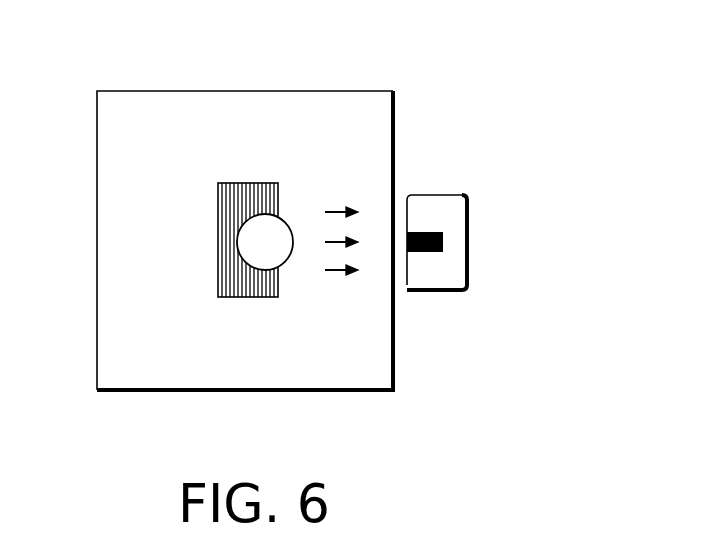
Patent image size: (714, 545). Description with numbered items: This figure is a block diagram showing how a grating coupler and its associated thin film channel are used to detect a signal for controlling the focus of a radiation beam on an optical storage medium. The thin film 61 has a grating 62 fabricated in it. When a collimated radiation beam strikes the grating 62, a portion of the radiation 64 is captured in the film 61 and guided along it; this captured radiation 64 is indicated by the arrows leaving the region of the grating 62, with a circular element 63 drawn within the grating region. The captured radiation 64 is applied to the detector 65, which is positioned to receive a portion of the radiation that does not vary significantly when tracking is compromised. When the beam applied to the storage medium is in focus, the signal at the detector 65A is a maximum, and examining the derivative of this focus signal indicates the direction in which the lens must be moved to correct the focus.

The thin film 61 is at (168, 91).
The grating 62 is at (253, 183).
The lamp 63 is at (284, 262).
The radiation 64 is at (335, 203).
The detector 65 is at (422, 195).
The detector 65A is at (445, 242).